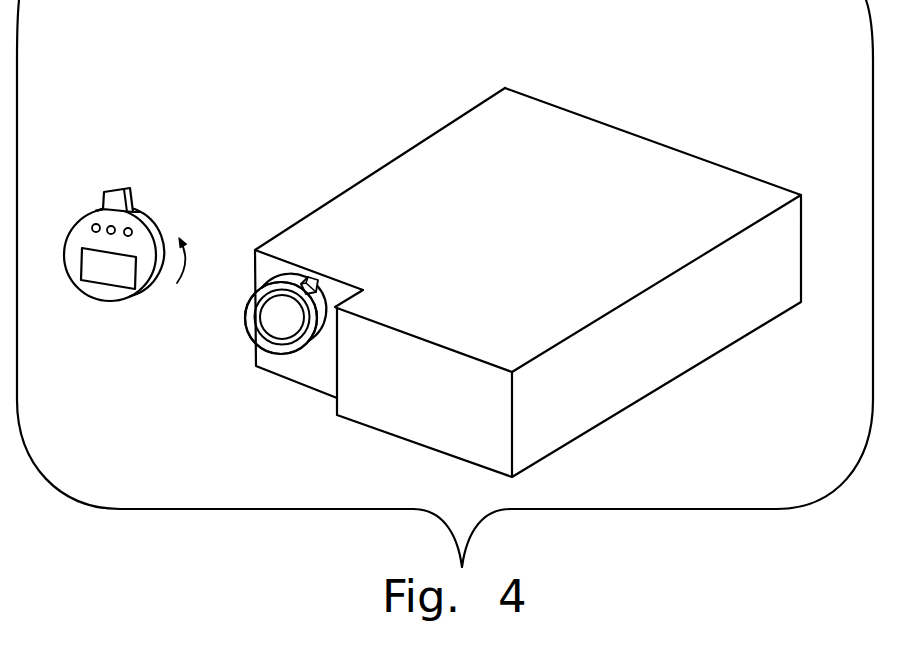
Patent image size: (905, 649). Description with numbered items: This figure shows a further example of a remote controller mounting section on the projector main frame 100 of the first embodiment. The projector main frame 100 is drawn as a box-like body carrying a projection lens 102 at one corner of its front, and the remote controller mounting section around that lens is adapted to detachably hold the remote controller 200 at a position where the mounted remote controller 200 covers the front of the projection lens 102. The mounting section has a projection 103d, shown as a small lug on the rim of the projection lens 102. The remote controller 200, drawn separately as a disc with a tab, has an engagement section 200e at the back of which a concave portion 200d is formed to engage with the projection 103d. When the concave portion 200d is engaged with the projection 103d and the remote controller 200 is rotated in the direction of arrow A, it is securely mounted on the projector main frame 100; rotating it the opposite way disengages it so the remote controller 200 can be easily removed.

The projector main frame 100 is at (550, 102).
The projection lens 102 is at (328, 293).
The projection 103d is at (312, 275).
The remote controller 200 is at (75, 223).
The engagement section 200e is at (120, 188).
The concave portion 200d is at (138, 197).